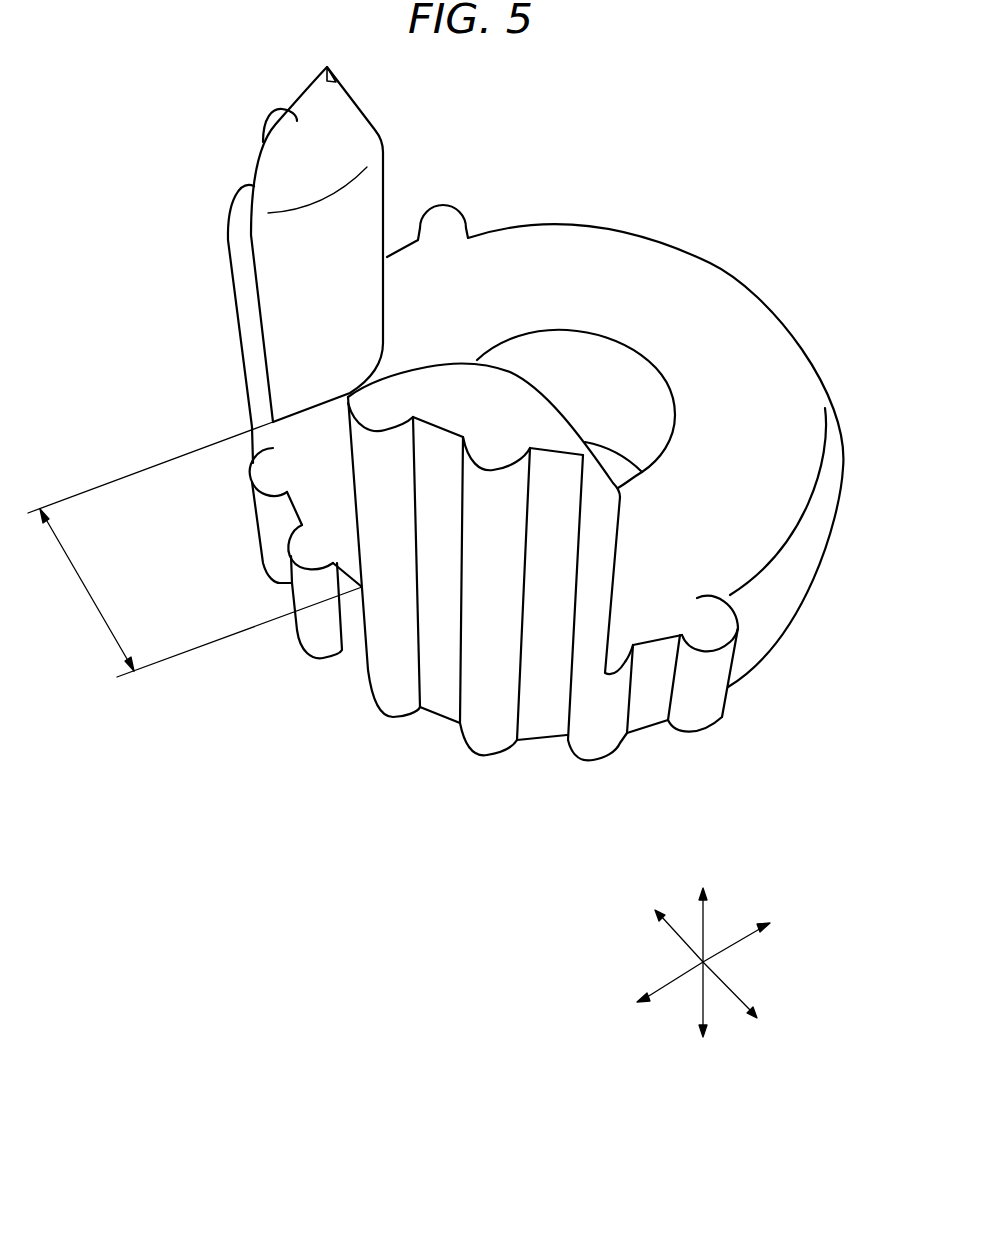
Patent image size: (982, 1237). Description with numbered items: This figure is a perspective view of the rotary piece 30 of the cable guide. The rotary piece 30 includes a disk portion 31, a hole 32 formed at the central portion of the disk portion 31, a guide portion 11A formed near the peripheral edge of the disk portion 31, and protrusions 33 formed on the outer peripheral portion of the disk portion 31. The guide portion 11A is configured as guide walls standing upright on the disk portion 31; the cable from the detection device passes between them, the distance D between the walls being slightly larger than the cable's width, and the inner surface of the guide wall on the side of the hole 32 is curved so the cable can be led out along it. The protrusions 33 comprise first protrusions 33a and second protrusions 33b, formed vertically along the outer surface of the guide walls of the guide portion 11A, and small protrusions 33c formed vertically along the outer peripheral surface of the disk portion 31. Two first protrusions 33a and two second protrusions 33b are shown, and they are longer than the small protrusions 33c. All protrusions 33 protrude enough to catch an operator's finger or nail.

The rotary piece 30 is at (759, 214).
The disk portion 31 is at (805, 360).
The hole 32 is at (583, 362).
The protrusions 33 is at (444, 458).
The first protrusions 33a is at (480, 678).
The second protrusions 33b is at (263, 130).
The small protrusions 33c is at (440, 223).
The guide portion 11A is at (333, 307).